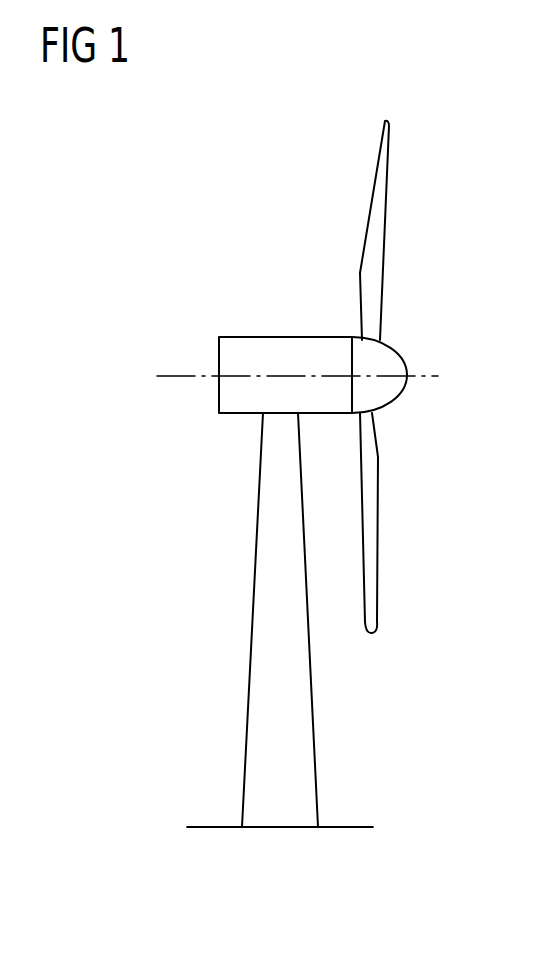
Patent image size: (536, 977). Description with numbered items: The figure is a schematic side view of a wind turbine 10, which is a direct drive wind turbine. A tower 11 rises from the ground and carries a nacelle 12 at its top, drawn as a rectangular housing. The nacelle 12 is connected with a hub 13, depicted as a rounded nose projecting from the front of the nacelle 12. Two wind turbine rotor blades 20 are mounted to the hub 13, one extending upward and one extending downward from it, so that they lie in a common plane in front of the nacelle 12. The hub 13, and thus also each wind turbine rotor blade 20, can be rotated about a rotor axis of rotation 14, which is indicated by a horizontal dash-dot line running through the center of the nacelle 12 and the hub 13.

The wind turbine 10 is at (176, 575).
The tower 11 is at (300, 742).
The nacelle 12 is at (240, 335).
The hub 13 is at (397, 353).
The rotor axis of rotation 14 is at (165, 375).
The wind turbine rotor blade 20 is at (375, 239).